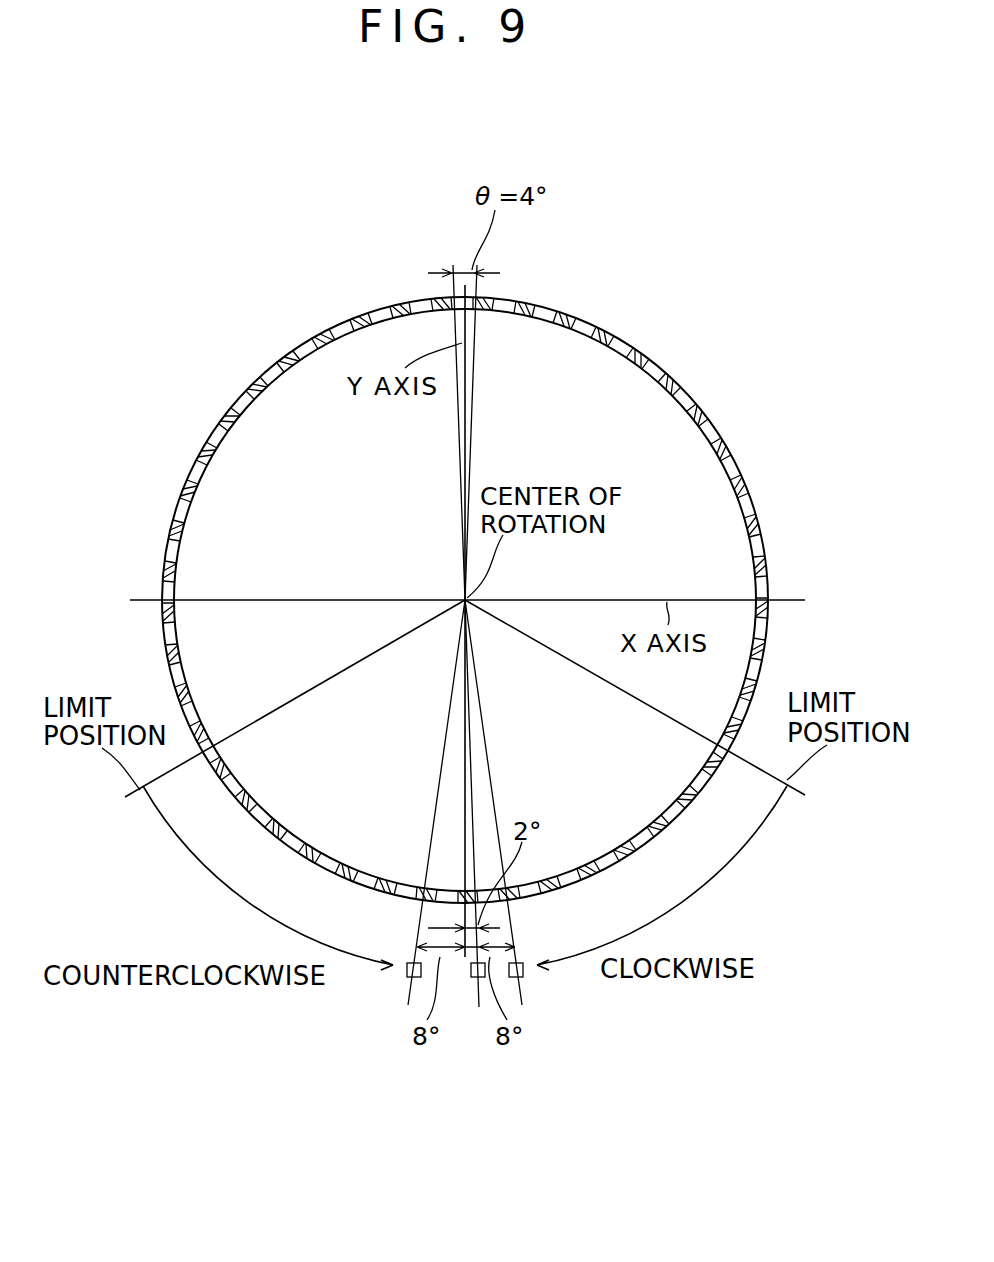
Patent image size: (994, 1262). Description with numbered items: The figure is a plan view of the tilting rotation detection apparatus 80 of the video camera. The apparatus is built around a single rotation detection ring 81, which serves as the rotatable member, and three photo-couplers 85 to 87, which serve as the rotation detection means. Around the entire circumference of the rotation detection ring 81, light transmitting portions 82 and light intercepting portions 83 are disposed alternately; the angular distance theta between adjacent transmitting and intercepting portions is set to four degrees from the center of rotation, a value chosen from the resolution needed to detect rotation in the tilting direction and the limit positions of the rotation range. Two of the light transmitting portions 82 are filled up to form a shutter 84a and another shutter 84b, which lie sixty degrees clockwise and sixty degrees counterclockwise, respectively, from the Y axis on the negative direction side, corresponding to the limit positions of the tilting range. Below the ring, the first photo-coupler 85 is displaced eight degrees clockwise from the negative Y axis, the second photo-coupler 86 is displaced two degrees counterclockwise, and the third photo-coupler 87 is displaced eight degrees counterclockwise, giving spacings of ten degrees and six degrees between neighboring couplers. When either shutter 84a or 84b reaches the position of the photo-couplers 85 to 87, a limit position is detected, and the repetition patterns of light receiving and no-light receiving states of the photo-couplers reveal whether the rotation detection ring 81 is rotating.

The tilting rotation detection apparatus 80 is at (209, 199).
The rotation detection ring 81 is at (252, 385).
The light transmitting portions 82 is at (343, 328).
The light intercepting portions 83 is at (570, 313).
The shutter 84a is at (203, 758).
The shutter 84b is at (723, 752).
The first photo-coupler 85 is at (405, 978).
The second photo-coupler 86 is at (476, 980).
The third photo-coupler 87 is at (527, 978).